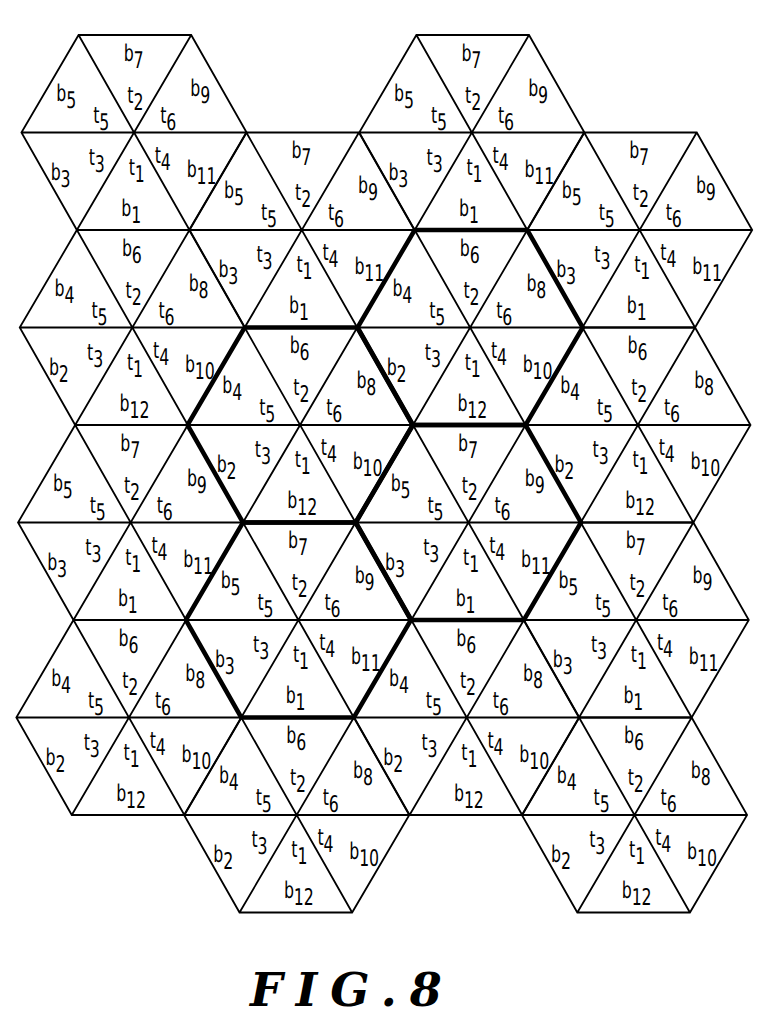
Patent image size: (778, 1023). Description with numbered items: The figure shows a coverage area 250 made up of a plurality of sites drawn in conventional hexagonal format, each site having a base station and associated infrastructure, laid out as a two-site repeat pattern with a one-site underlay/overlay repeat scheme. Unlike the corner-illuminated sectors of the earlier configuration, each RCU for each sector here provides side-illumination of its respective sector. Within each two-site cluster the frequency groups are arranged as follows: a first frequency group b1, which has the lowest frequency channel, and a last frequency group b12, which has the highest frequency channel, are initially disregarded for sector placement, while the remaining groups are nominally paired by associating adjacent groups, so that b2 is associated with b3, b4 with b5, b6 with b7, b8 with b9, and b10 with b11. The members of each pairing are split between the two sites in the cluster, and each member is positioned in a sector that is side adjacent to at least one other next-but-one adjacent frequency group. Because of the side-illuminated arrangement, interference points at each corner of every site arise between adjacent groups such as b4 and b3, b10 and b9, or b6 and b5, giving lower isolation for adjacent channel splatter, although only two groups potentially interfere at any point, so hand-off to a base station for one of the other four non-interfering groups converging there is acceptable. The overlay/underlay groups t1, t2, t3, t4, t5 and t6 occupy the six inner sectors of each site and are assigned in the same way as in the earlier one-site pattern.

The coverage area 250 is at (323, 32).
The frequency group t1 is at (387, 511).
The frequency group t2 is at (385, 439).
The frequency group t3 is at (347, 501).
The frequency group t4 is at (413, 499).
The frequency group t5 is at (351, 459).
The frequency group t6 is at (418, 459).
The first frequency group b1 is at (382, 454).
The frequency group b2 is at (310, 613).
The frequency group b3 is at (311, 418).
The frequency group b4 is at (315, 534).
The frequency group b5 is at (317, 339).
The frequency group b6 is at (383, 494).
The frequency group b7 is at (384, 299).
The frequency group b8 is at (449, 529).
The frequency group b9 is at (451, 334).
The frequency group b10 is at (451, 610).
The frequency group b11 is at (452, 415).
The last frequency group b12 is at (385, 649).